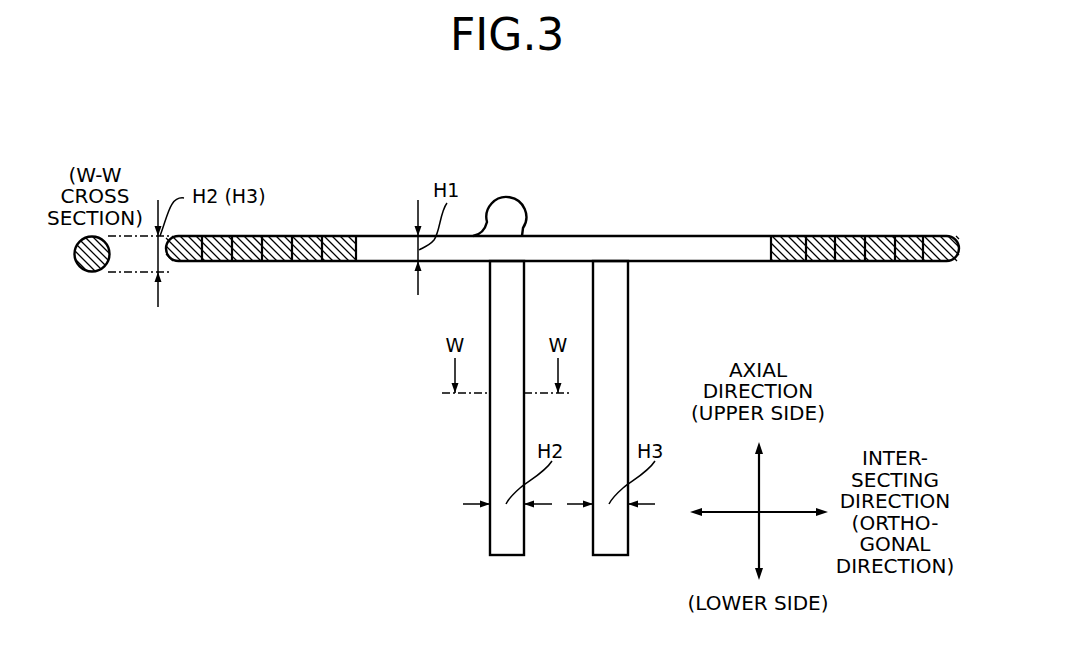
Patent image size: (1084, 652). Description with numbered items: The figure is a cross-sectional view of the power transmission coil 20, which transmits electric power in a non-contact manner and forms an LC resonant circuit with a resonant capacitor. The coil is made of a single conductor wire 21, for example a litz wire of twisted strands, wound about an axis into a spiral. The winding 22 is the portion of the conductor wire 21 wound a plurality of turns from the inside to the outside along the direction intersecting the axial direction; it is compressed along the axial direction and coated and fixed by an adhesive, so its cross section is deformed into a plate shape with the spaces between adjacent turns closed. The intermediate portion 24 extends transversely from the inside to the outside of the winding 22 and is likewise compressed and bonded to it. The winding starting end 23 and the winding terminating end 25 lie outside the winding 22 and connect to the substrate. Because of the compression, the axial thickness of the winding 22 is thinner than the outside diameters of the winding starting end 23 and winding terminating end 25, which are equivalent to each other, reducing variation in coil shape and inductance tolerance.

The power transmission coil 20 is at (635, 166).
The conductor wire 21 is at (562, 221).
The winding 22 is at (786, 236).
The winding starting end 23 is at (507, 557).
The intermediate portion 24 is at (504, 197).
The winding terminating end 25 is at (610, 557).